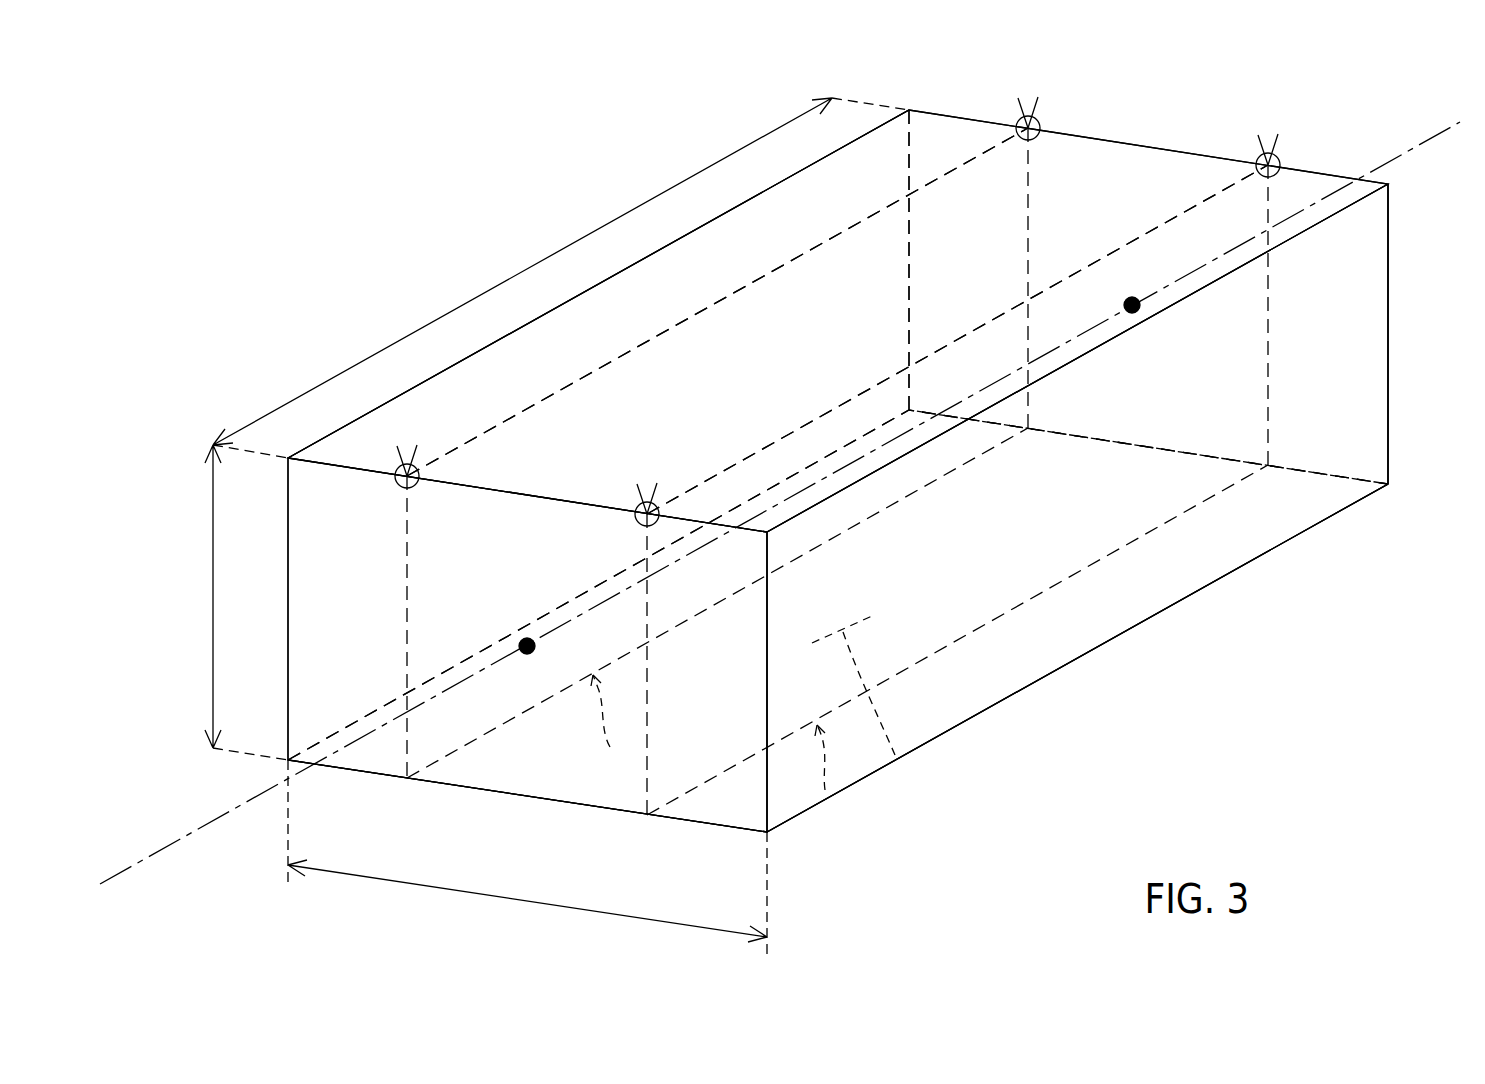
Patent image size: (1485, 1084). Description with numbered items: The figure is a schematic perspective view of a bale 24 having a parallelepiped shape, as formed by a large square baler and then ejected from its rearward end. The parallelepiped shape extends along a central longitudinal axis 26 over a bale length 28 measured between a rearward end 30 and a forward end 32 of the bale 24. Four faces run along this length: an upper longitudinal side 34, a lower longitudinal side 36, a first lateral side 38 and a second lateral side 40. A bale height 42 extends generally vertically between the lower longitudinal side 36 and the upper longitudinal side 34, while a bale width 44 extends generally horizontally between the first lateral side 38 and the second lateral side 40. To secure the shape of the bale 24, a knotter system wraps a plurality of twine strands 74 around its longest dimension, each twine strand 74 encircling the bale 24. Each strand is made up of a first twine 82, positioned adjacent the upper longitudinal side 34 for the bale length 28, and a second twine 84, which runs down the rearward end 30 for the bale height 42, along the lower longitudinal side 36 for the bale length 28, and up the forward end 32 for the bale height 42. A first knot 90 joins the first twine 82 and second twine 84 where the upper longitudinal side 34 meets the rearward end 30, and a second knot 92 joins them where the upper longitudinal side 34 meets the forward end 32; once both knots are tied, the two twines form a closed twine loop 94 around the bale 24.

The bale 24 is at (550, 289).
The central longitudinal axis 26 is at (138, 872).
The bale length 28 is at (655, 196).
The rearward end 30 is at (1333, 345).
The forward end 32 is at (573, 738).
The upper longitudinal side 34 is at (640, 295).
The lower longitudinal side 36 is at (897, 756).
The first lateral side 38 is at (1048, 522).
The second lateral side 40 is at (553, 343).
The bale height 42 is at (212, 596).
The bale width 44 is at (445, 892).
The twine strand 74 is at (542, 400).
The first twine 82 is at (772, 272).
The second twine 84 is at (865, 520).
The first knot 90 is at (1018, 124).
The second knot 92 is at (399, 486).
The twine loop 94 is at (853, 837).